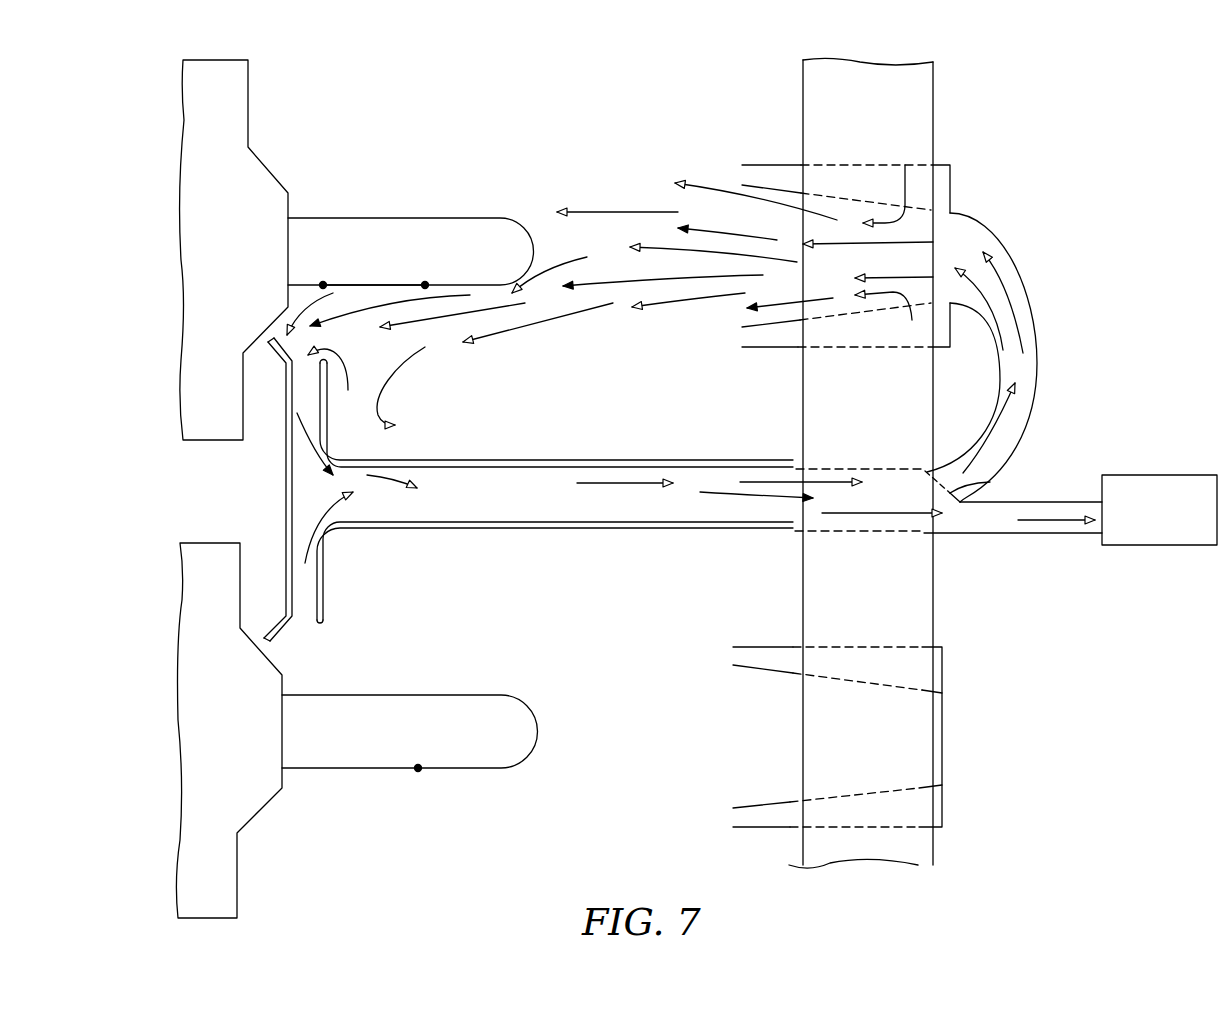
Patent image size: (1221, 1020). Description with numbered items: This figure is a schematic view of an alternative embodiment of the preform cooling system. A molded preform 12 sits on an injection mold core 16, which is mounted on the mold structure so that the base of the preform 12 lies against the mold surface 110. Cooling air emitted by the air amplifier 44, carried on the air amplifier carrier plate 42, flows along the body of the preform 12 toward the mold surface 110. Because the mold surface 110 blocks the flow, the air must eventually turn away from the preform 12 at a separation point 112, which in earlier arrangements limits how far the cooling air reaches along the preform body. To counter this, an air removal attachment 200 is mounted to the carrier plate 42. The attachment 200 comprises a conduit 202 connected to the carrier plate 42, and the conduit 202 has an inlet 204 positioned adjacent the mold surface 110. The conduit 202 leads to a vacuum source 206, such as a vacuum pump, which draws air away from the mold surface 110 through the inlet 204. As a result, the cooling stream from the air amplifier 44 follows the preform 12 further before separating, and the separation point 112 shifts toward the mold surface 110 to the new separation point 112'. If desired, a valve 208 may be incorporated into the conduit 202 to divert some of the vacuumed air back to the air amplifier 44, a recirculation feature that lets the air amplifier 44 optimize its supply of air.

The preform 12 is at (350, 217).
The injection mold core 16 is at (406, 269).
The air amplifier carrier plate 42 is at (933, 127).
The air amplifier 44 is at (770, 163).
The mold surface 110 is at (270, 168).
The separation point 112 is at (461, 264).
The new separation point 112' is at (342, 258).
The air removal attachment 200 is at (342, 545).
The conduit 202 is at (632, 530).
The inlet 204 is at (303, 613).
The vacuum source 206 is at (1152, 474).
The valve 208 is at (990, 482).